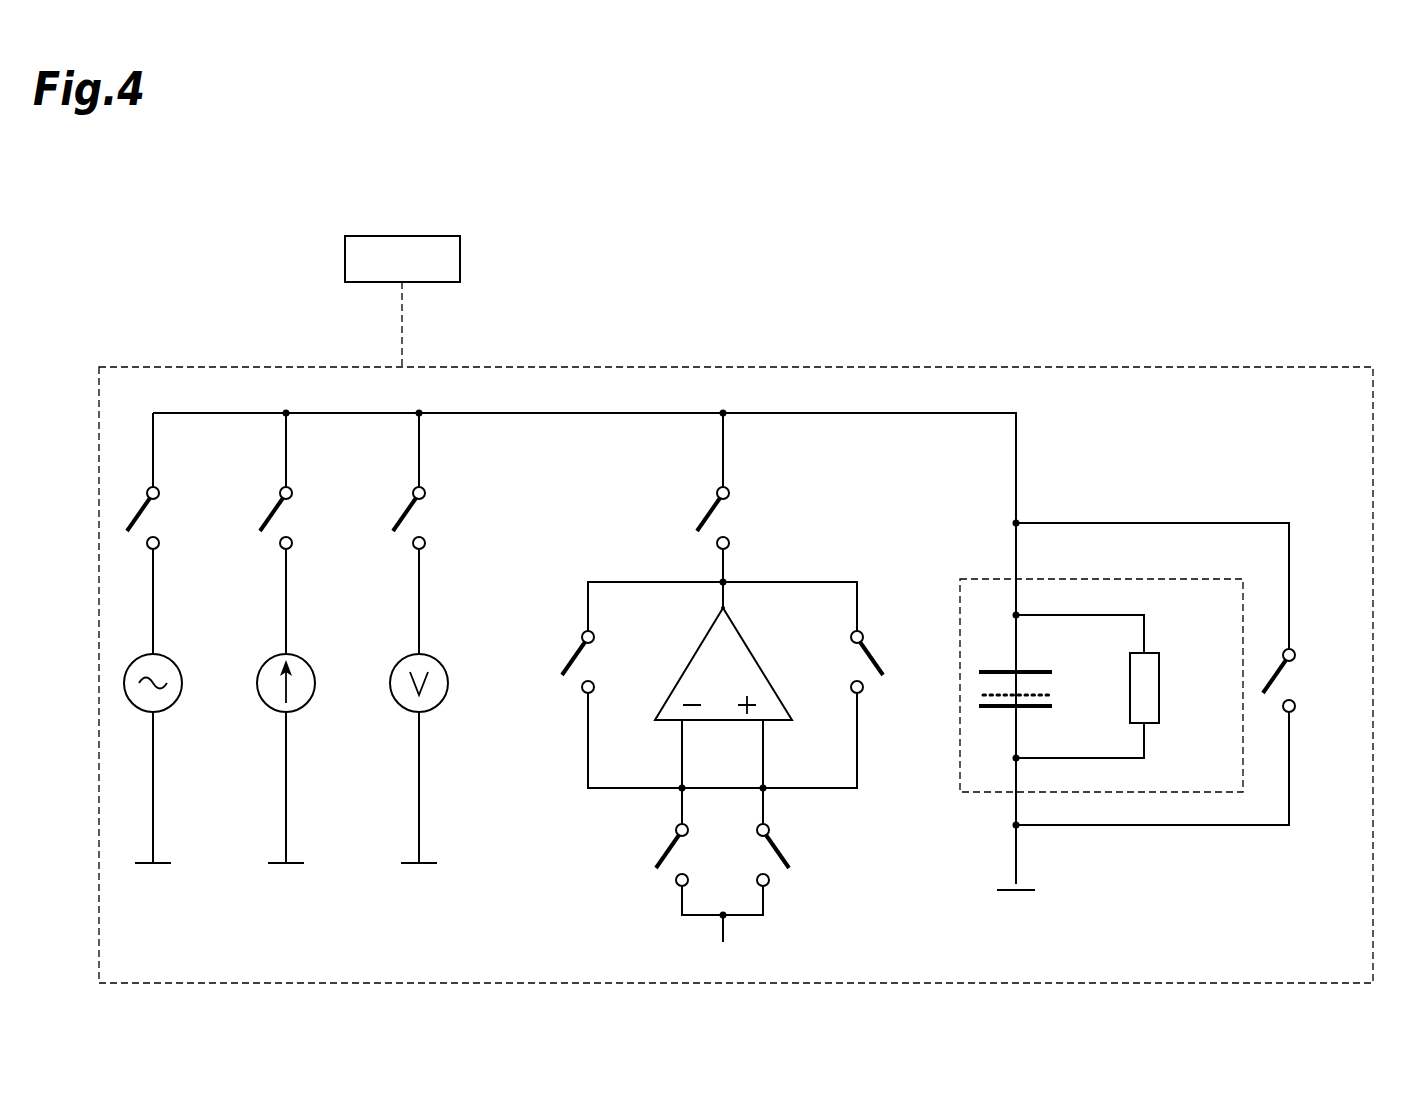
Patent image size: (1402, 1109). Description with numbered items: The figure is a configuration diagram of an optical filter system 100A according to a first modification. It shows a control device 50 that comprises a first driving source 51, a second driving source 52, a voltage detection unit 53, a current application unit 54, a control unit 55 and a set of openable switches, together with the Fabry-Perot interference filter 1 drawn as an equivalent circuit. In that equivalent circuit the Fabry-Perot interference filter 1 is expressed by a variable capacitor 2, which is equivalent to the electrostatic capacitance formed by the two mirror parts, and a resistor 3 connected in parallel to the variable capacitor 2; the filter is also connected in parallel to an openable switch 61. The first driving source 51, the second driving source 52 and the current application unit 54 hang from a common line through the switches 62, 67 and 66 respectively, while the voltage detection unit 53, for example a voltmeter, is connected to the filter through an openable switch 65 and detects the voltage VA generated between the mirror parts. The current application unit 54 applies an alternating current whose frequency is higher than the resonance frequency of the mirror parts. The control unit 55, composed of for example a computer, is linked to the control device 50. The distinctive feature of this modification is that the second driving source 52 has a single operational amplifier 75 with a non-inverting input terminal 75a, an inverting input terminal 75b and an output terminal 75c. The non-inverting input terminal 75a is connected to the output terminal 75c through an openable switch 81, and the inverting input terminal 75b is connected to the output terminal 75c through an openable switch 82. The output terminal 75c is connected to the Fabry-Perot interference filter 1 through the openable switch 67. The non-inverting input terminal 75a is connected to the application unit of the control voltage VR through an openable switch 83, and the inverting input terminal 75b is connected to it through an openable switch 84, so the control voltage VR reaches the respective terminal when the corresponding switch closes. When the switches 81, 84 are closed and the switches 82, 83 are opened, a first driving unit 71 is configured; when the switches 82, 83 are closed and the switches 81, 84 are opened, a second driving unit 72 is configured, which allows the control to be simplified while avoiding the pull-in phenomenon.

The optical filter system 100A is at (1311, 157).
The control device 50 is at (1019, 340).
The control unit 55 is at (462, 246).
The switch 66 is at (140, 512).
The switch 62 is at (273, 512).
The switch 65 is at (406, 512).
The switch 67 is at (710, 512).
The current application unit 54 is at (174, 660).
The first driving source 51 is at (304, 655).
The voltage detection unit 53 is at (439, 657).
The second driving source 52 is at (633, 570).
The operational amplifier 75 is at (752, 652).
The non-inverting input terminal 75a is at (765, 724).
The inverting input terminal 75b is at (680, 724).
The output terminal 75c is at (720, 608).
The switch 81 is at (869, 651).
The switch 82 is at (576, 651).
The switch 83 is at (784, 846).
The switch 84 is at (666, 845).
The first driving unit 71 is at (842, 801).
The second driving unit 72 is at (714, 884).
The Fabry-Perot interference filter 1 is at (1173, 579).
The variable capacitor 2 is at (1038, 668).
The resistor 3 is at (1160, 667).
The switch 61 is at (1278, 680).